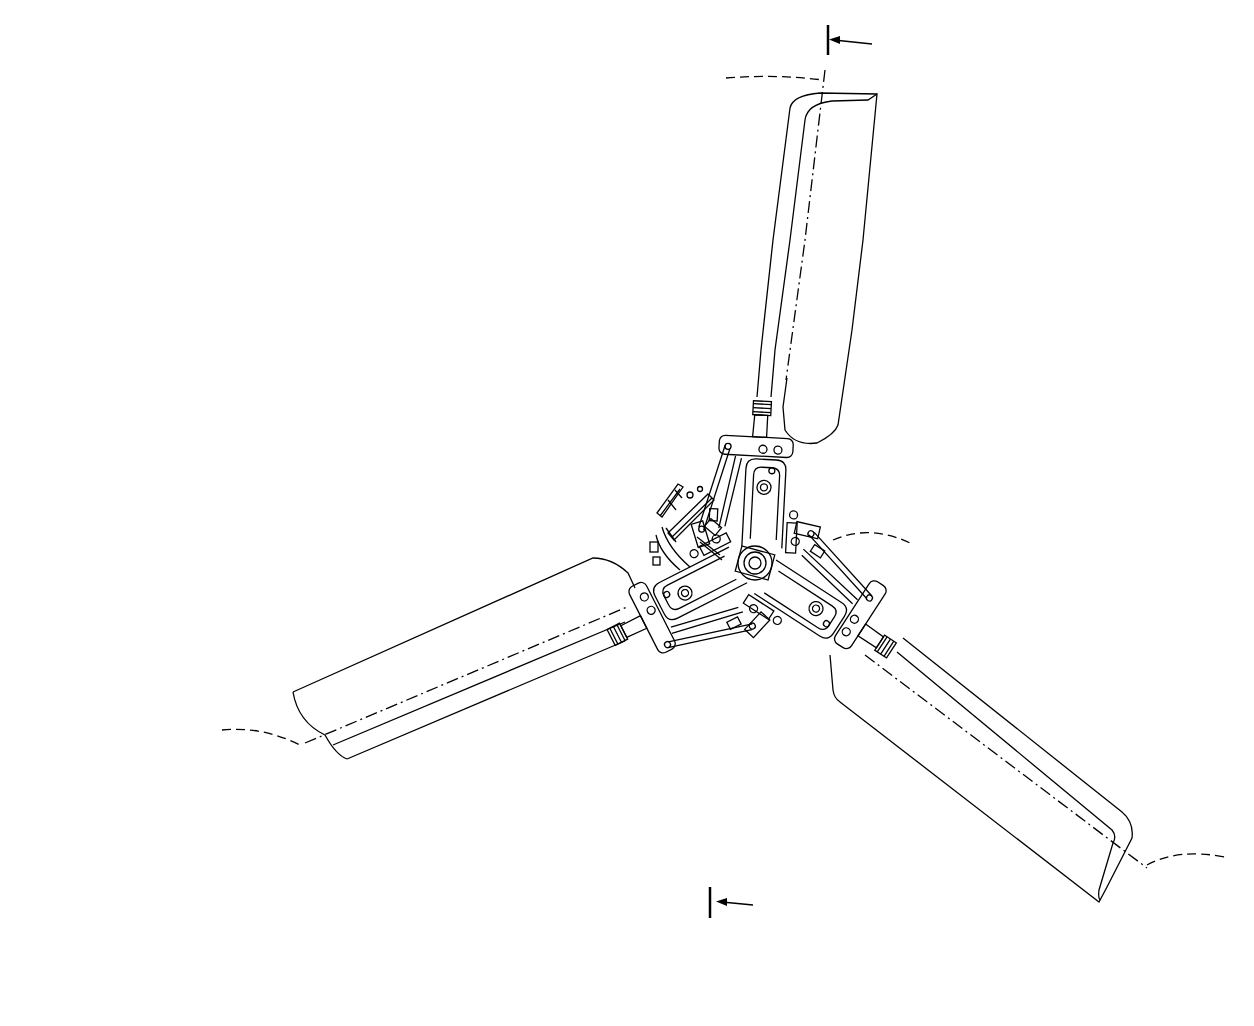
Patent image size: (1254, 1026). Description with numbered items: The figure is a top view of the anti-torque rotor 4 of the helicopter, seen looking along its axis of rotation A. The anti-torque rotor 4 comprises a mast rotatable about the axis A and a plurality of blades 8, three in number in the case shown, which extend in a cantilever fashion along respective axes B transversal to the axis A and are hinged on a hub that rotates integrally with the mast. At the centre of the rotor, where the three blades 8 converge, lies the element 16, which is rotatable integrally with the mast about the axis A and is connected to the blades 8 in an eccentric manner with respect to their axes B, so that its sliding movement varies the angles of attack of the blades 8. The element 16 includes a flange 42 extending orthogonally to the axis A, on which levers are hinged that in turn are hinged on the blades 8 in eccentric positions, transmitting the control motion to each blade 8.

The anti-torque rotor 4 is at (1056, 230).
The blade 8 is at (852, 242).
The element 16 is at (836, 498).
The flange 42 is at (792, 638).